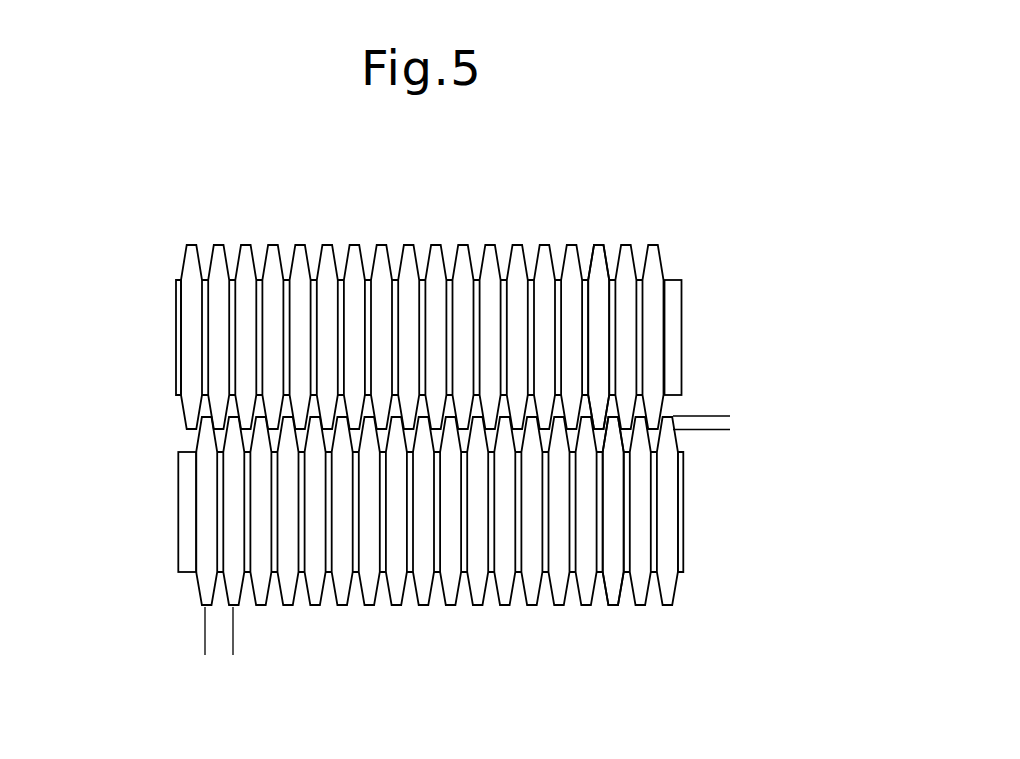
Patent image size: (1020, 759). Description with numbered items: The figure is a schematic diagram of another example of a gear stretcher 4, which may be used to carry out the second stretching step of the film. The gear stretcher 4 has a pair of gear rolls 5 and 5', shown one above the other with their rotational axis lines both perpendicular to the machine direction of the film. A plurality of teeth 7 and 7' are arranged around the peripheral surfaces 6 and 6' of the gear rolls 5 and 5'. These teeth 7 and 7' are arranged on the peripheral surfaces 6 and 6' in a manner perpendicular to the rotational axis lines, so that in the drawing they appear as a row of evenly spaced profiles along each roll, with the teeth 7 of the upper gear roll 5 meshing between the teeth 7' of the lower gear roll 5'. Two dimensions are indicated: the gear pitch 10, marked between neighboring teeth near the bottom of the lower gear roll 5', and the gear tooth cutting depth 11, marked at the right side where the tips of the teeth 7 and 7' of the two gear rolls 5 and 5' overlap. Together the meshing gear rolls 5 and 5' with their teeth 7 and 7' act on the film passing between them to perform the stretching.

The gear stretcher 4 is at (188, 197).
The gear roll 5 is at (499, 307).
The gear roll 5' is at (368, 539).
The peripheral surface 6 is at (708, 337).
The peripheral surface 6' is at (154, 512).
The teeth 7 is at (618, 307).
The teeth 7' is at (637, 539).
The gear pitch 10 is at (258, 643).
The gear tooth cutting depth 11 is at (722, 390).